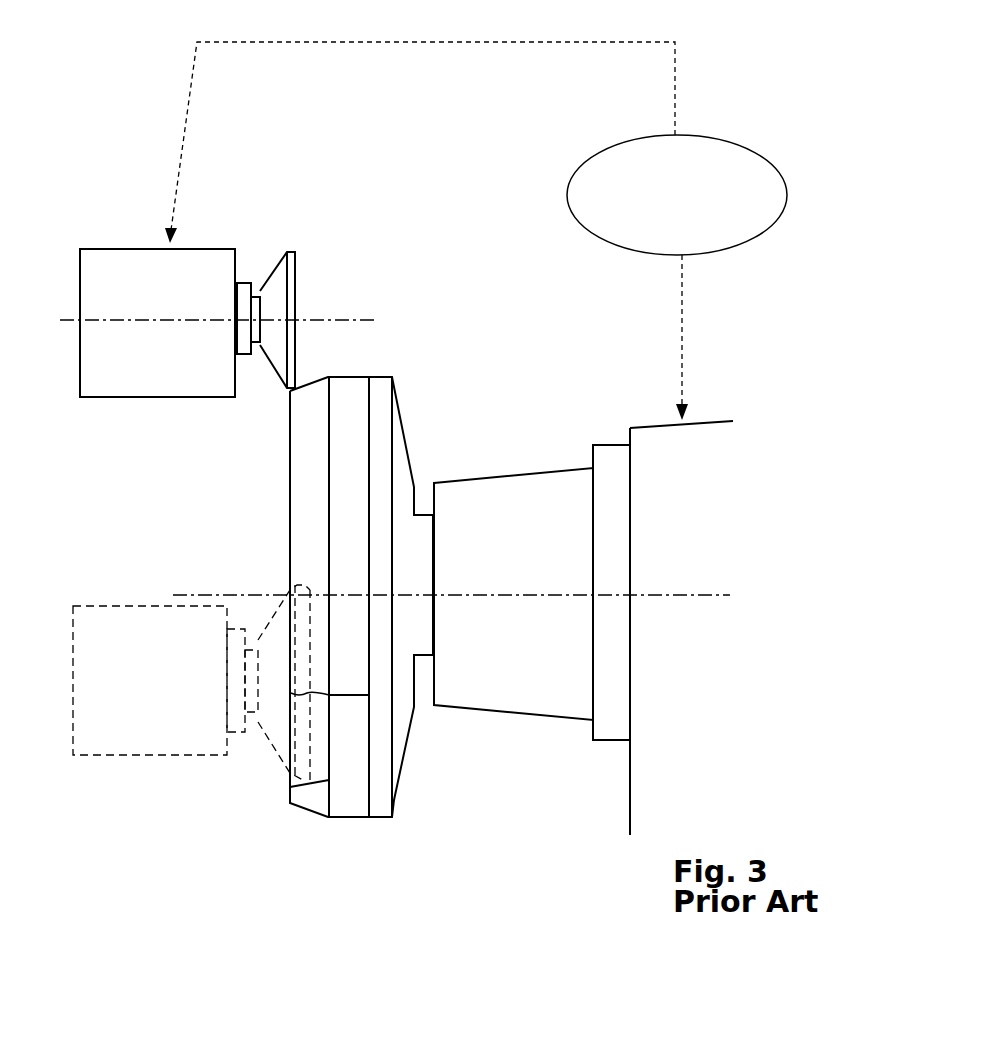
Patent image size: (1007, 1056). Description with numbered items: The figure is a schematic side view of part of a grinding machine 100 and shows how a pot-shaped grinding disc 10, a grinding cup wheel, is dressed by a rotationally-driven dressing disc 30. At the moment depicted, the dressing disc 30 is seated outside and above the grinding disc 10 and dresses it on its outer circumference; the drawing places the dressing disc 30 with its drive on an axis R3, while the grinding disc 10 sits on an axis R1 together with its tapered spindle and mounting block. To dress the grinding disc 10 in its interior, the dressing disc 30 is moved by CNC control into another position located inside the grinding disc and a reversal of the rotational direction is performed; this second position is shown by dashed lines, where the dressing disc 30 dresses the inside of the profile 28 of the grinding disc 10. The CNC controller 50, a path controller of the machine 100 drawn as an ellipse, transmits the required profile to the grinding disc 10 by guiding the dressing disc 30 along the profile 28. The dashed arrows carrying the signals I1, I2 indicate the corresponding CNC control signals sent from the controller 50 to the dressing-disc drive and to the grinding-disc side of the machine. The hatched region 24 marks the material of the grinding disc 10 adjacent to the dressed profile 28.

The grinding machine 100 is at (616, 420).
The CNC controller 50 is at (677, 195).
The dressing disc 30 is at (293, 250).
The grinding disc 10 is at (428, 380).
The profile 28 is at (292, 805).
The cut portion 24 is at (394, 802).
The rotation axis of workpiece R1 is at (473, 599).
The rotation axis of tool R3 is at (199, 322).
The CNC control signal I1 is at (420, 127).
The CNC control signal I2 is at (693, 337).